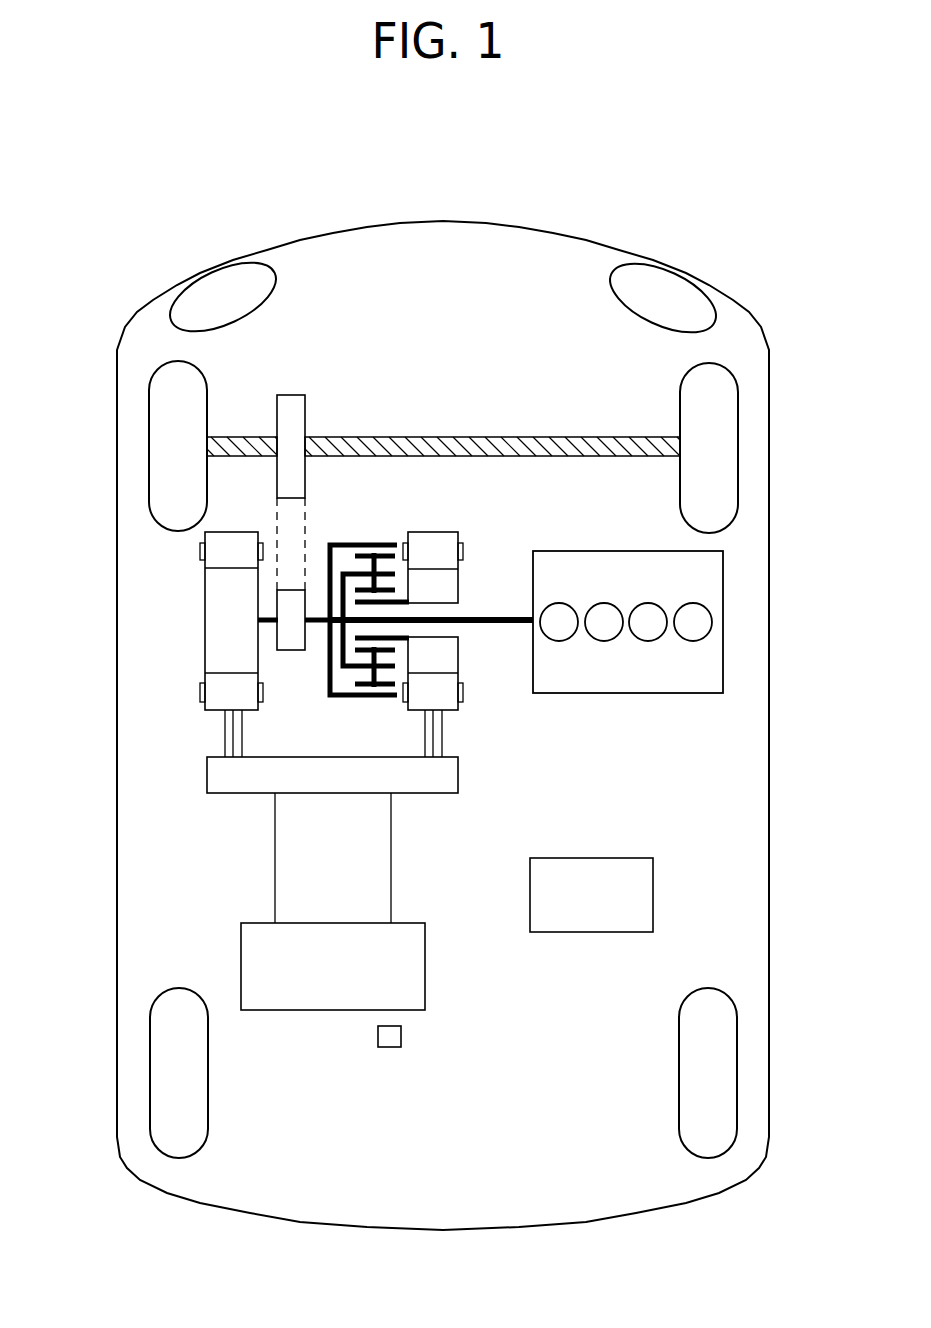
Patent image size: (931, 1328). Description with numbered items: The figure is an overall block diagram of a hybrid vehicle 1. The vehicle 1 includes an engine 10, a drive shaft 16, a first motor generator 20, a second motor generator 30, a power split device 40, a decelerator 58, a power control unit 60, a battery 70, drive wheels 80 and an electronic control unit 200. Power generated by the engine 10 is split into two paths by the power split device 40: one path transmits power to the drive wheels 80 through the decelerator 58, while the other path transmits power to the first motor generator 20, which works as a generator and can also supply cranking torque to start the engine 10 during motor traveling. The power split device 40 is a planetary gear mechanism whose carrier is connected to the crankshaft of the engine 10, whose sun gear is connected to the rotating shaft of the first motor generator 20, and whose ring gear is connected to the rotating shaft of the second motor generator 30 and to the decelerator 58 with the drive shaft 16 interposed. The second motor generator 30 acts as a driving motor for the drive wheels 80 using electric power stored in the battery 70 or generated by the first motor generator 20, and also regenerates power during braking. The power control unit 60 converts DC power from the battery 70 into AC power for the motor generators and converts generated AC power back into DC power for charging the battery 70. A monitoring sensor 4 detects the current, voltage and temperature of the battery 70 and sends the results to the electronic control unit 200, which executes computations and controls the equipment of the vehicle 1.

The vehicle 1 is at (435, 192).
The monitoring sensor 4 is at (388, 1049).
The engine 10 is at (622, 551).
The drive shaft 16 is at (318, 627).
The first motor generator 20 is at (432, 531).
The second motor generator 30 is at (232, 531).
The power split device 40 is at (363, 532).
The decelerator 58 is at (292, 395).
The power control unit 60 is at (207, 776).
The battery 70 is at (325, 1012).
The drive wheels 80 is at (200, 366).
The electronic control unit 200 is at (588, 934).